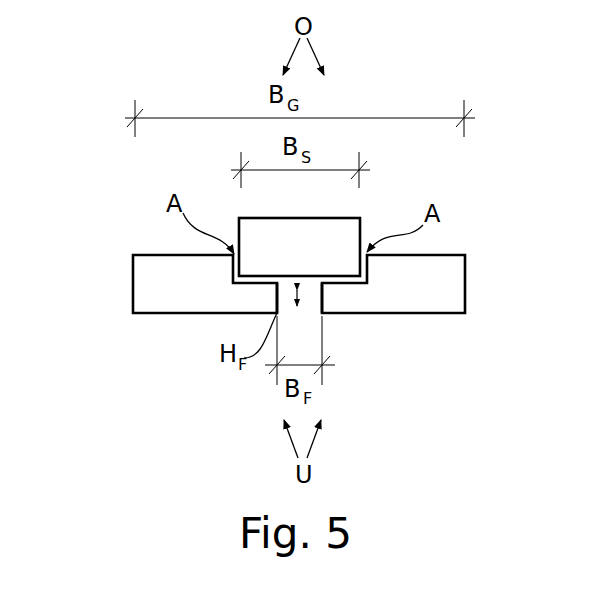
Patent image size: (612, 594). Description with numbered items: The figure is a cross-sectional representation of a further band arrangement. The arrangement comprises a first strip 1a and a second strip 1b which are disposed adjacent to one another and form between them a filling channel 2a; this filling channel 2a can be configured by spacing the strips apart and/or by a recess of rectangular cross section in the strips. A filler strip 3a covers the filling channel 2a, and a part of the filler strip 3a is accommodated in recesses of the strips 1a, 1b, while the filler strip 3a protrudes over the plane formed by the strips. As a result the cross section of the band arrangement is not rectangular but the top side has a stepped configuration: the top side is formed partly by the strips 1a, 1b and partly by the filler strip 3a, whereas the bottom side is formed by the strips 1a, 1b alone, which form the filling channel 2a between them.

The first strip 1a is at (149, 287).
The second strip 1b is at (450, 286).
The filling channel 2a is at (307, 305).
The filler strip 3a is at (343, 222).